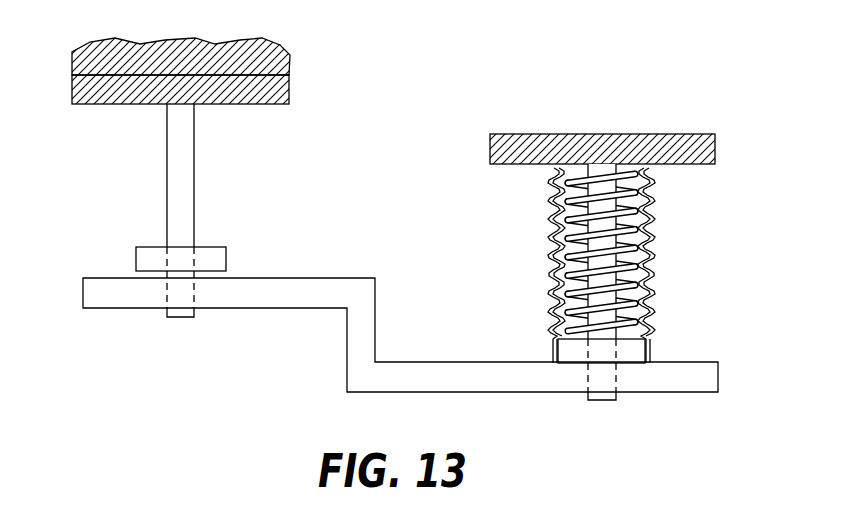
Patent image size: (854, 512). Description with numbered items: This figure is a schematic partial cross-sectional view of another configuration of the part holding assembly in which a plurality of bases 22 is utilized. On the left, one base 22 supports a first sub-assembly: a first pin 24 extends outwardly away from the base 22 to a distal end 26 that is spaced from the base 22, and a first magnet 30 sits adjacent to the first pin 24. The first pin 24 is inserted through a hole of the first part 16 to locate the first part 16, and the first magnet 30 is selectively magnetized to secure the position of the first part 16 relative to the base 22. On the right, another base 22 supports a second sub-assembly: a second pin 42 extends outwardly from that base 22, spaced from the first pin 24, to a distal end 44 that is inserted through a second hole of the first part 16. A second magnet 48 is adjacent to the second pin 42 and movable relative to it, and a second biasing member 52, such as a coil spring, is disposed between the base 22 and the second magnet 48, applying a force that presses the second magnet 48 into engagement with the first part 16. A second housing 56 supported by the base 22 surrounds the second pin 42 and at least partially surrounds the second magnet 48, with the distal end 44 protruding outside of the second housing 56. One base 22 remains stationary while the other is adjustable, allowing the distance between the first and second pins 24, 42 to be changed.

The first part 16 is at (398, 377).
The base 22 is at (277, 91).
The first pin 24 is at (184, 162).
The distal end 26 is at (160, 313).
The first magnet 30 is at (157, 259).
The second pin 42 is at (650, 238).
The distal end 44 is at (585, 395).
The second magnet 48 is at (635, 353).
The second biasing member 52 is at (637, 212).
The second housing 56 is at (655, 300).